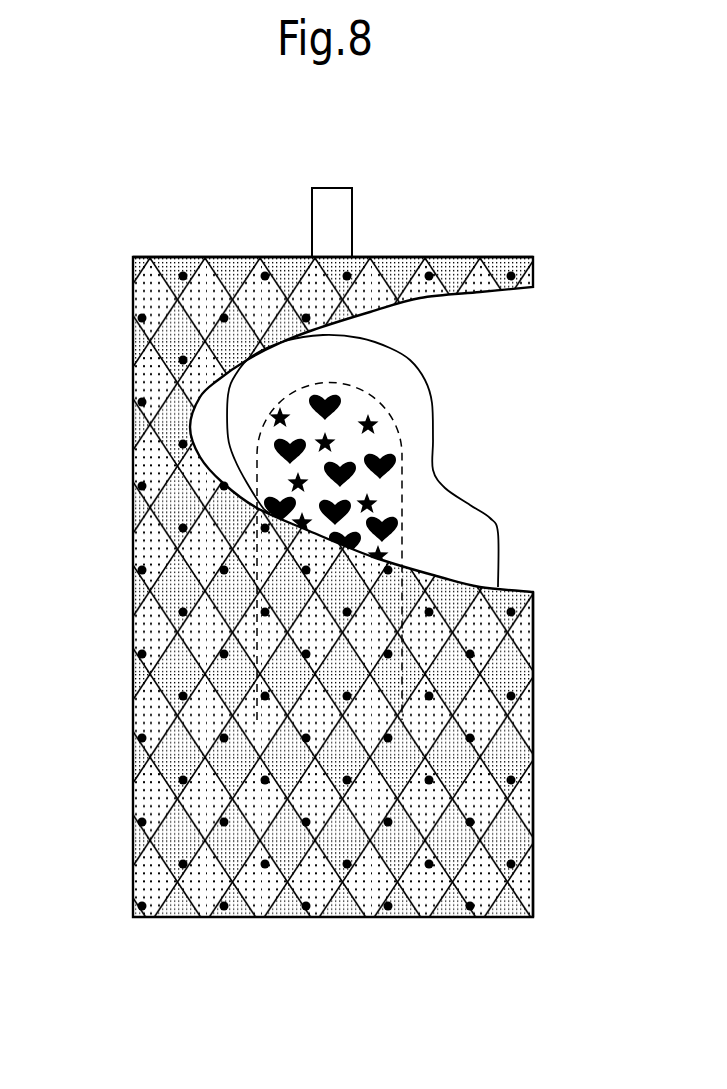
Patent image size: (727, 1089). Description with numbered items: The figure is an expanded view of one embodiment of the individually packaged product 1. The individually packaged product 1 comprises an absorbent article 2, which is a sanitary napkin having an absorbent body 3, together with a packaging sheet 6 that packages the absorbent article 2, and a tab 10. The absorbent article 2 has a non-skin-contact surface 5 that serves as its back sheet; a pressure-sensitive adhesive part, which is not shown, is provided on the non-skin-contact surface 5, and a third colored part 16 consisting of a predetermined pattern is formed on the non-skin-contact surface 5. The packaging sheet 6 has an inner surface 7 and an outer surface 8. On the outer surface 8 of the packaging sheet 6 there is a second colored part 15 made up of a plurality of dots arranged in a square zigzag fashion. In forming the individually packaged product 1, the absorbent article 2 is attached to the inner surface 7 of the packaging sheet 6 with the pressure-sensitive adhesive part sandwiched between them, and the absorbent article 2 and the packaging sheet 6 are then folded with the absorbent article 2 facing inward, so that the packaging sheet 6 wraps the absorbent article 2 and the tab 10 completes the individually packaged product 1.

The individually packaged product 1 is at (108, 221).
The absorbent article 2 is at (488, 553).
The absorbent body 3 is at (265, 490).
The non-skin-contact surface 5 is at (388, 442).
The packaging sheet 6 is at (560, 238).
The inner surface 7 is at (533, 885).
The outer surface 8 is at (522, 838).
The tab 10 is at (340, 222).
The second colored part 15 is at (516, 778).
The third colored part 16 is at (388, 498).